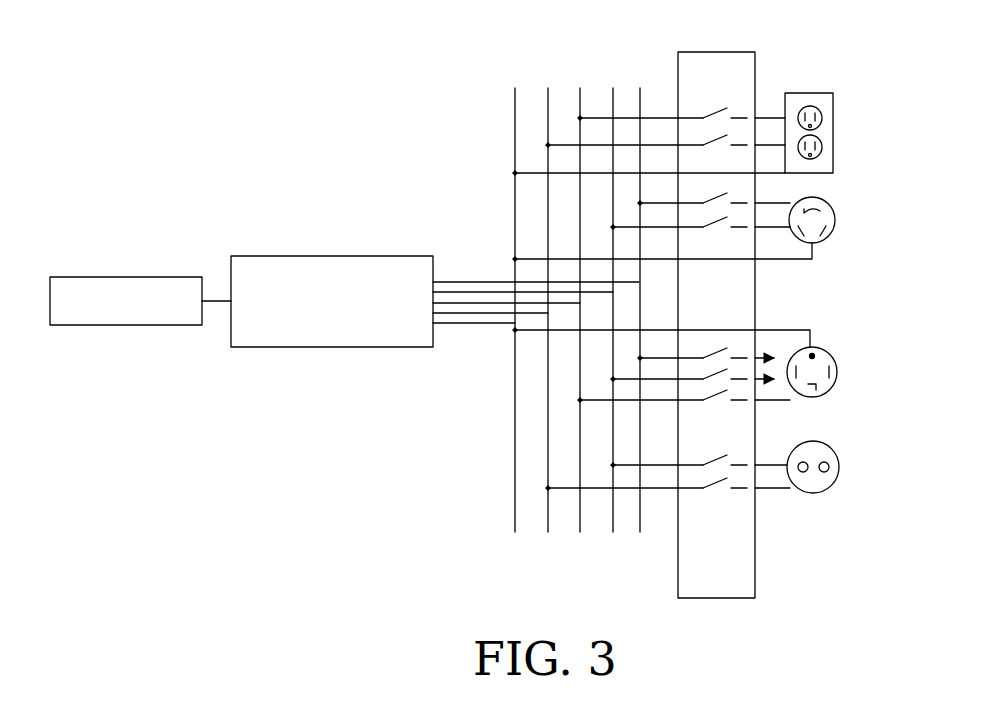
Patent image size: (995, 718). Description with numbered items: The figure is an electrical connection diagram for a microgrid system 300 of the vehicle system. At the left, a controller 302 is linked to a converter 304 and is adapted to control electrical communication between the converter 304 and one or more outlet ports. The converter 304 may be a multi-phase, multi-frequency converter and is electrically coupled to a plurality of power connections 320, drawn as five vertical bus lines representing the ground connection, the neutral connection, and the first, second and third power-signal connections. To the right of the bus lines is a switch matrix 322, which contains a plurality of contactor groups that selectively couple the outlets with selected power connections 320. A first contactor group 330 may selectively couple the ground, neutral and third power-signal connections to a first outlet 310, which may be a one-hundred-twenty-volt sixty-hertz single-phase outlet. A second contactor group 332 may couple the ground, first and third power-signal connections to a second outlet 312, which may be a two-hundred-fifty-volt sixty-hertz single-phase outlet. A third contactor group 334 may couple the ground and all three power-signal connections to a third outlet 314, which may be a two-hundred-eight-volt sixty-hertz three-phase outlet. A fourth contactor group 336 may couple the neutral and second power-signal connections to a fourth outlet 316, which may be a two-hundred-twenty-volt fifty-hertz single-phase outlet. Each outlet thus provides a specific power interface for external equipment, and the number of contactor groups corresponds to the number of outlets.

The microgrid system 300 is at (208, 130).
The controller 302 is at (124, 277).
The converter 304 is at (330, 256).
The first outlet 310 is at (835, 118).
The second outlet 312 is at (836, 215).
The third outlet 314 is at (838, 372).
The fourth outlet 316 is at (840, 468).
The power connections 320 is at (502, 55).
The switch matrix 322 is at (757, 568).
The first contactor group 330 is at (742, 82).
The second contactor group 332 is at (741, 248).
The third contactor group 334 is at (738, 330).
The fourth contactor group 336 is at (731, 506).